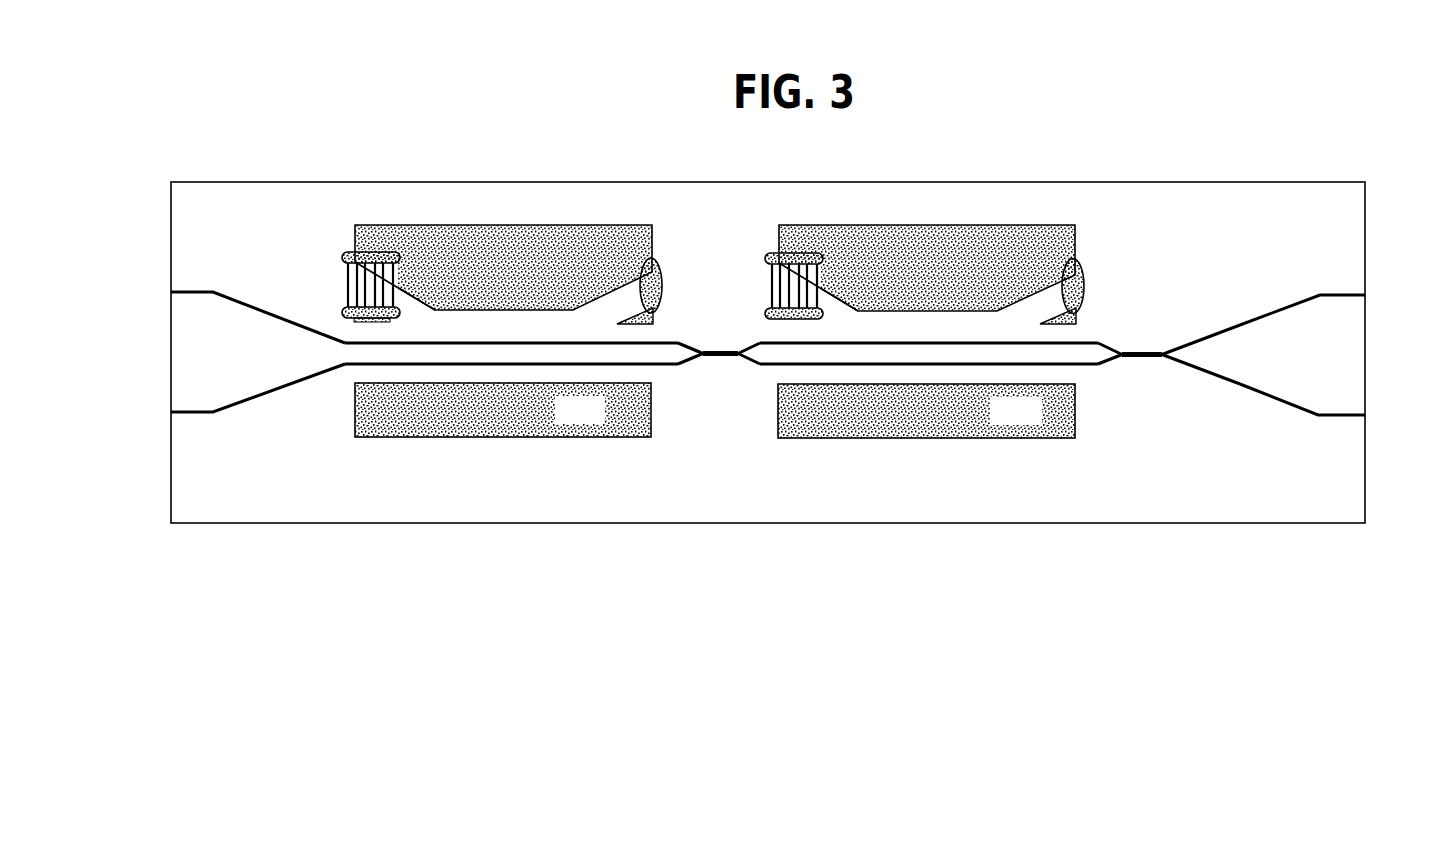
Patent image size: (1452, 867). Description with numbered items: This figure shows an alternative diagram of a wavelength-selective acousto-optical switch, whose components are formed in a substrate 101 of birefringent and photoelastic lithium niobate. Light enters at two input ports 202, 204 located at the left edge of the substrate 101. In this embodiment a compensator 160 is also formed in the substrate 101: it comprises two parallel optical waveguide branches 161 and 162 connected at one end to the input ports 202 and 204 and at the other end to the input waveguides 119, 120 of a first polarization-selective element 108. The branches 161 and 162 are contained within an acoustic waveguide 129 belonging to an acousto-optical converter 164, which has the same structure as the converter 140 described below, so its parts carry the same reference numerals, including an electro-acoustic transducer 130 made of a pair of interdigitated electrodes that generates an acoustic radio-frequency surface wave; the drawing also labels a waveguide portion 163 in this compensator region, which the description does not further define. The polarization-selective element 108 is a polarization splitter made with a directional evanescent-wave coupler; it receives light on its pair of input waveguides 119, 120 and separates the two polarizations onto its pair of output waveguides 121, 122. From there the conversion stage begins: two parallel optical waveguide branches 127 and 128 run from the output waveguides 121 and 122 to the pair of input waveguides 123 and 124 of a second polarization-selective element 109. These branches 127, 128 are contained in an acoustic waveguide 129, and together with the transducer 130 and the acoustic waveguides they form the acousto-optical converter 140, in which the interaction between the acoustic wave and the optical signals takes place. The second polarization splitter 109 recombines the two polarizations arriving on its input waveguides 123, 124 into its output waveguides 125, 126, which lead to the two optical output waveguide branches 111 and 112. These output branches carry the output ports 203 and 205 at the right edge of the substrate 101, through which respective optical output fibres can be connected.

The substrate 101 is at (1229, 192).
The polarization-selective element 108 is at (716, 322).
The polarization-selective element 109 is at (1143, 372).
The optical output waveguide branch 111 is at (1247, 318).
The optical output waveguide branch 112 is at (1252, 398).
The optical input waveguide 119 is at (688, 342).
The optical input waveguide 120 is at (689, 366).
The optical output waveguide 121 is at (744, 343).
The optical output waveguide 122 is at (747, 366).
The optical input waveguide 123 is at (1117, 342).
The optical input waveguide 124 is at (1112, 366).
The optical output waveguide 125 is at (1183, 347).
The optical output waveguide 126 is at (1182, 368).
The optical waveguide branch 127 is at (848, 340).
The optical waveguide branch 128 is at (1008, 366).
The acoustic waveguide 129 is at (946, 376).
The electro-acoustic transducer 130 is at (345, 291).
The acousto-optical converter 140 is at (903, 420).
The compensator 160 is at (482, 216).
The optical waveguide branch 161 is at (395, 340).
The optical waveguide branch 162 is at (574, 366).
The waveguide arm 163 is at (496, 377).
The acousto-optical converter 164 is at (447, 418).
The input port 202 is at (171, 292).
The output port 203 is at (1365, 296).
The input port 204 is at (171, 412).
The output port 205 is at (1365, 416).